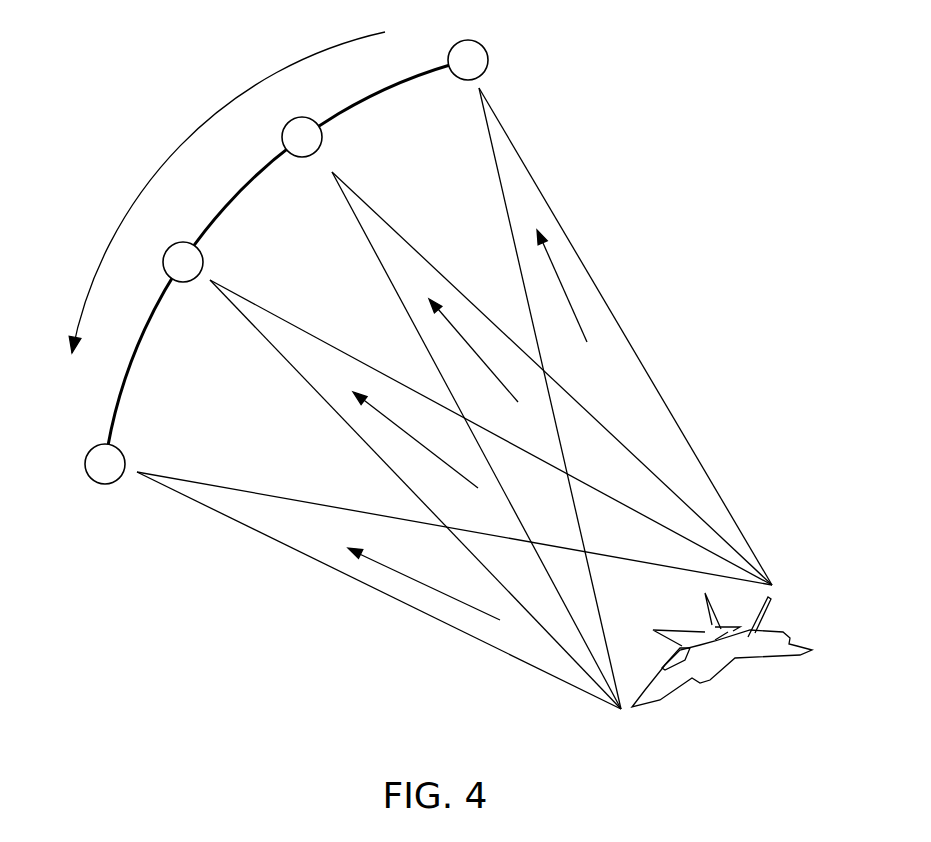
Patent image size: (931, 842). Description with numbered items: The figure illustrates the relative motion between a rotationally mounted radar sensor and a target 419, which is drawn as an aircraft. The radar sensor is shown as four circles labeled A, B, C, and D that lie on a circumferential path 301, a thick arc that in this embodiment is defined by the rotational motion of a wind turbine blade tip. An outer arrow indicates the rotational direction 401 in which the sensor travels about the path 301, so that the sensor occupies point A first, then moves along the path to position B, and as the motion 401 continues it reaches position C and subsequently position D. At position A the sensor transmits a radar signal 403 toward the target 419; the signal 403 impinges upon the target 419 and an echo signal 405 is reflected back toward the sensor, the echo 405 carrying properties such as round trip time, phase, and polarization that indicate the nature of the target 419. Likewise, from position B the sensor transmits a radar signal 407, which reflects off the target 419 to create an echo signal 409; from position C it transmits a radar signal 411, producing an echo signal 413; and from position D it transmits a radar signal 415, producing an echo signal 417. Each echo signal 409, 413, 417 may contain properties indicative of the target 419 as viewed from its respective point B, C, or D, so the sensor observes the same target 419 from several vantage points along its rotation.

The circumferential path 301 is at (405, 80).
The rotational direction 401 is at (166, 160).
The radar signal 403 is at (535, 173).
The echo signal 405 is at (565, 290).
The radar signal 407 is at (395, 229).
The echo signal 409 is at (463, 337).
The radar signal 411 is at (272, 313).
The echo signal 413 is at (412, 437).
The radar signal 415 is at (258, 494).
The echo signal 417 is at (402, 573).
The target 419 is at (680, 692).
The sensor position A is at (485, 52).
The sensor position B is at (302, 119).
The sensor position C is at (183, 245).
The sensor position D is at (92, 467).